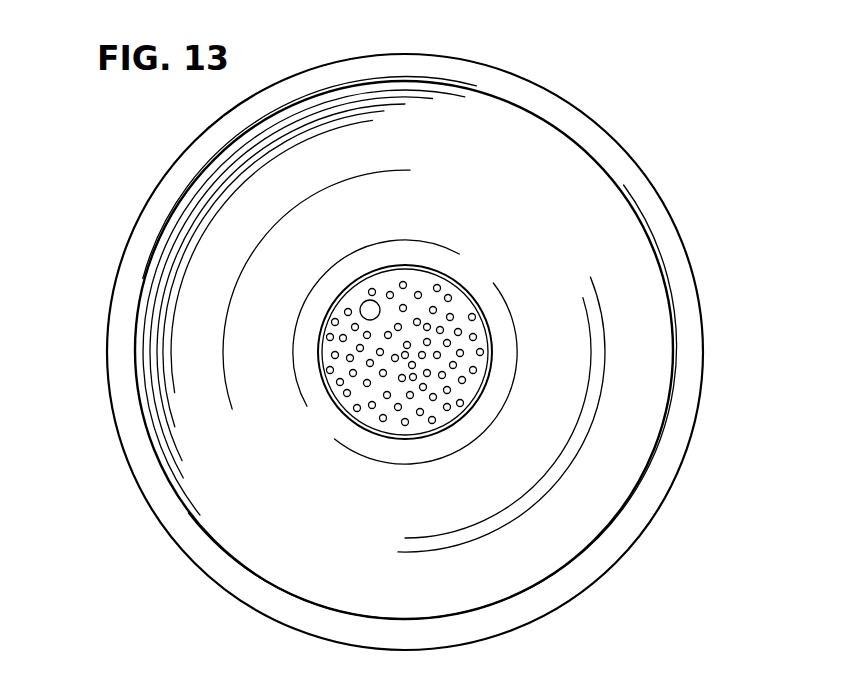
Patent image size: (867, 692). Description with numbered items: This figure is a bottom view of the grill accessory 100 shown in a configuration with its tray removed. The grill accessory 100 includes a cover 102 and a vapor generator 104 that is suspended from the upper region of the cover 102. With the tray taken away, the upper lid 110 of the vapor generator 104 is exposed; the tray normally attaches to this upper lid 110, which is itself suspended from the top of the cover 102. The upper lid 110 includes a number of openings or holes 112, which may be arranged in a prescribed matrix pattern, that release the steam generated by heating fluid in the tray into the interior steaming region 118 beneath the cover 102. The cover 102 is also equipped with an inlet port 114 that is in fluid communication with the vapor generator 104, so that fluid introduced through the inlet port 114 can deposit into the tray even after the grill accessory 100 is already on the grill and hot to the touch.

The grill accessory 100 is at (634, 102).
The cover 102 is at (655, 188).
The vapor generator 104 is at (304, 353).
The upper lid 110 is at (362, 426).
The holes 112 is at (448, 293).
The inlet port 114 is at (363, 310).
The interior steaming region 118 is at (618, 465).